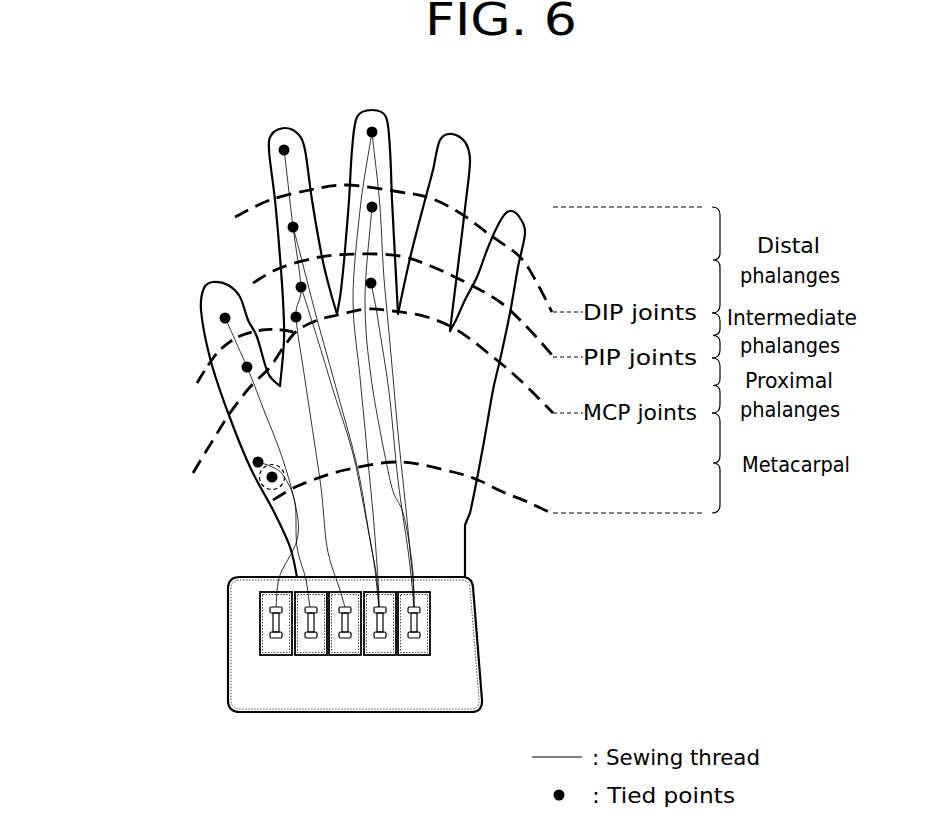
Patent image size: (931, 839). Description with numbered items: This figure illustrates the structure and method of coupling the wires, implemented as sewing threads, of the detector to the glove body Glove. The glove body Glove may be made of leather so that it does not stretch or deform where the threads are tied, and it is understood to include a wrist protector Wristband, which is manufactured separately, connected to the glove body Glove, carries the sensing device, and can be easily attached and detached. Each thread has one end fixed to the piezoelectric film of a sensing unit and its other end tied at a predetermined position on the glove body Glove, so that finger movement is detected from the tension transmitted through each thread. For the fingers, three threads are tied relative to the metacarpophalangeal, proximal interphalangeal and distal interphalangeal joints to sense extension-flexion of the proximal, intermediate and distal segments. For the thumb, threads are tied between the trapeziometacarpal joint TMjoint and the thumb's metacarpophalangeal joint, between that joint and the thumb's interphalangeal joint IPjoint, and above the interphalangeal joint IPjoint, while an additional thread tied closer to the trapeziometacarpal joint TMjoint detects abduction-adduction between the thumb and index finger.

The glove body Glove is at (440, 547).
The wrist protector Wristband is at (237, 695).
The interphalangeal joint of the thumb IPjoint is at (196, 380).
The TM joint of the thumb TMjoint is at (262, 495).